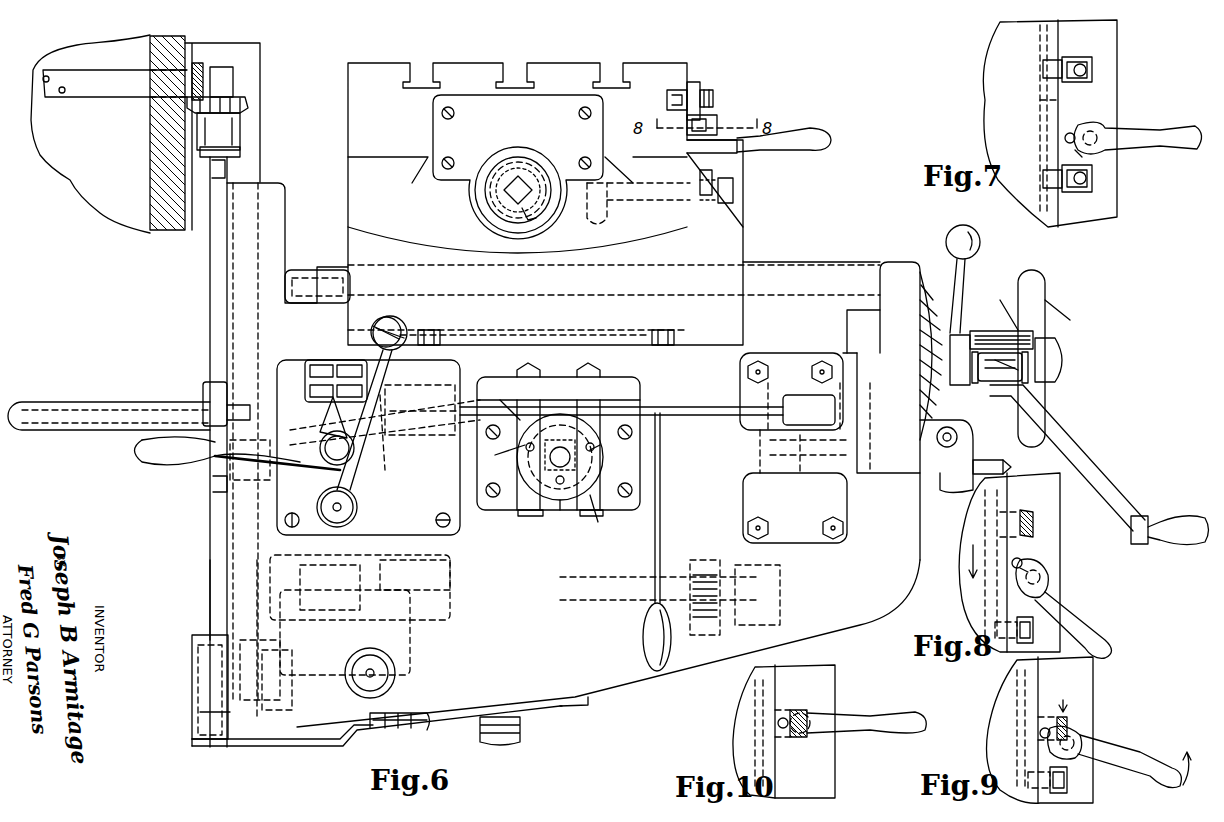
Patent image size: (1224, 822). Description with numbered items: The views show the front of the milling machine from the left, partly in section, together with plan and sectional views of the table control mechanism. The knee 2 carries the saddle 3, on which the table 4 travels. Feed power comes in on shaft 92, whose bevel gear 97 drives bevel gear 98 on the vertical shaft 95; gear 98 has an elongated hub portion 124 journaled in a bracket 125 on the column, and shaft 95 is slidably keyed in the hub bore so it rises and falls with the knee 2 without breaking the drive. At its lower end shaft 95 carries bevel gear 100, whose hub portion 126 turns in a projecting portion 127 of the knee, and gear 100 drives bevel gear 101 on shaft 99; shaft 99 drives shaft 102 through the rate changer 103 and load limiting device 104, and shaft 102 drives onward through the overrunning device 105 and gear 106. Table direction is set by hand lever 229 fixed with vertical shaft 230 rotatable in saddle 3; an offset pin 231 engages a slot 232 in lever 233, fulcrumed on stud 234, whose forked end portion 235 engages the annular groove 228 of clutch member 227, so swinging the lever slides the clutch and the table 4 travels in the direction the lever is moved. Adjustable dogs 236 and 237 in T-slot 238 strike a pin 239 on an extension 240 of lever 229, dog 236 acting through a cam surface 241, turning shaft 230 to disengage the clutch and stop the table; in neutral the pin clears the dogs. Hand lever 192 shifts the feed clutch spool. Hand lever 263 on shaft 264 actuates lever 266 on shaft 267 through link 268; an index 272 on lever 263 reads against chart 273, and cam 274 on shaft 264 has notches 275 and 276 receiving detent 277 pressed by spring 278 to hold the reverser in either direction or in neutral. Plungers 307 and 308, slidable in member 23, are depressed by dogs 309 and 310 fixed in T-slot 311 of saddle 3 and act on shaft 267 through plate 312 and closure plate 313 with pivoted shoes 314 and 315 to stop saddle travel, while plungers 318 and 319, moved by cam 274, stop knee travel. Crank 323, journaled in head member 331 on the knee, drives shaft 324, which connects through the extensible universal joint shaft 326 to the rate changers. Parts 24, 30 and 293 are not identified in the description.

In FIG. 6, the knee 2 is at (622, 688).
In FIG. 6, the saddle 3 is at (745, 233).
In FIG. 6, the table 4 is at (630, 63).
In FIG. 7, the table 4 is at (1005, 95).
In FIG. 8, the table 4 is at (1050, 503).
In FIG. 6, the member 23 is at (645, 481).
In FIG. 6, the lever 24 is at (655, 564).
In FIG. 6, the hand crank 30 is at (1070, 440).
In FIG. 6, the shaft 92 is at (107, 90).
In FIG. 6, the vertical shaft 95 is at (210, 600).
In FIG. 6, the bevel gear 97 is at (200, 62).
In FIG. 6, the bevel gear 98 is at (245, 103).
In FIG. 6, the shaft 99 is at (287, 690).
In FIG. 6, the bevel gear 100 is at (210, 687).
In FIG. 6, the bevel gear 101 is at (255, 640).
In FIG. 6, the shaft 102 is at (587, 600).
In FIG. 6, the rate changer 103 is at (408, 641).
In FIG. 6, the load limiting device 104 is at (404, 565).
In FIG. 6, the overrunning device 105 is at (745, 640).
In FIG. 6, the gear 106 is at (775, 622).
In FIG. 6, the hub portion 124 is at (242, 151).
In FIG. 6, the bracket 125 is at (242, 127).
In FIG. 6, the hub portion 126 is at (200, 714).
In FIG. 6, the projecting portion 127 is at (190, 750).
In FIG. 6, the hand lever 192 is at (965, 257).
In FIG. 6, the clutch member 227 is at (490, 185).
In FIG. 6, the annular groove 228 is at (500, 197).
In FIG. 6, the hand lever 229 is at (815, 137).
In FIG. 7, the hand lever 229 is at (1195, 147).
In FIG. 8, the hand lever 229 is at (1070, 611).
In FIG. 9, the hand lever 229 is at (1165, 756).
In FIG. 10, the hand lever 229 is at (862, 736).
In FIG. 6, the vertical shaft 230 is at (737, 162).
In FIG. 8, the vertical shaft 230 is at (1040, 580).
In FIG. 9, the vertical shaft 230 is at (1070, 738).
In FIG. 6, the offset pin 231 is at (710, 195).
In FIG. 6, the slot 232 is at (738, 184).
In FIG. 6, the lever 233 is at (648, 196).
In FIG. 6, the stud 234 is at (605, 212).
In FIG. 6, the forked end portion 235 is at (530, 220).
In FIG. 7, the dog 236 is at (1082, 57).
In FIG. 8, the dog 236 is at (1010, 512).
In FIG. 9, the dog 236 is at (1045, 716).
In FIG. 10, the dog 236 is at (805, 712).
In FIG. 6, the dog 237 is at (702, 90).
In FIG. 7, the dog 237 is at (1090, 182).
In FIG. 8, the dog 237 is at (1042, 630).
In FIG. 9, the dog 237 is at (1070, 785).
In FIG. 6, the T-slot 238 is at (680, 92).
In FIG. 7, the T-slot 238 is at (1045, 100).
In FIG. 6, the pin 239 is at (712, 120).
In FIG. 7, the pin 239 is at (1073, 134).
In FIG. 8, the pin 239 is at (1022, 562).
In FIG. 9, the pin 239 is at (1040, 740).
In FIG. 10, the pin 239 is at (786, 730).
In FIG. 7, the extension 240 is at (1078, 152).
In FIG. 8, the extension 240 is at (1035, 568).
In FIG. 8, the cam surface 241 is at (1035, 536).
In FIG. 6, the hand lever 263 is at (160, 470).
In FIG. 6, the shaft 264 is at (316, 481).
In FIG. 6, the lever 266 is at (515, 405).
In FIG. 6, the shaft 267 is at (575, 462).
In FIG. 6, the link 268 is at (470, 460).
In FIG. 6, the index 272 is at (310, 392).
In FIG. 6, the chart 273 is at (372, 368).
In FIG. 6, the cam 274 is at (378, 458).
In FIG. 6, the notch 275 is at (315, 410).
In FIG. 6, the notch 276 is at (320, 445).
In FIG. 6, the detent 277 is at (290, 490).
In FIG. 6, the spring 278 is at (219, 428).
In FIG. 6, the hand wheel hub 293 is at (1062, 346).
In FIG. 6, the plunger 307 is at (525, 372).
In FIG. 6, the plunger 308 is at (580, 372).
In FIG. 6, the dog 309 is at (438, 325).
In FIG. 6, the dog 310 is at (642, 332).
In FIG. 6, the T-slot 311 is at (500, 331).
In FIG. 6, the plate 312 is at (590, 490).
In FIG. 6, the closure plate 313 is at (598, 522).
In FIG. 6, the pivoted shoe 314 is at (502, 459).
In FIG. 6, the pivoted shoe 315 is at (595, 450).
In FIG. 6, the plunger 318 is at (200, 386).
In FIG. 6, the plunger 319 is at (220, 484).
In FIG. 6, the crank 323 is at (952, 445).
In FIG. 6, the shaft 324 is at (705, 426).
In FIG. 6, the extensible universal joint shaft 326 is at (65, 431).
In FIG. 6, the head member 331 is at (866, 333).